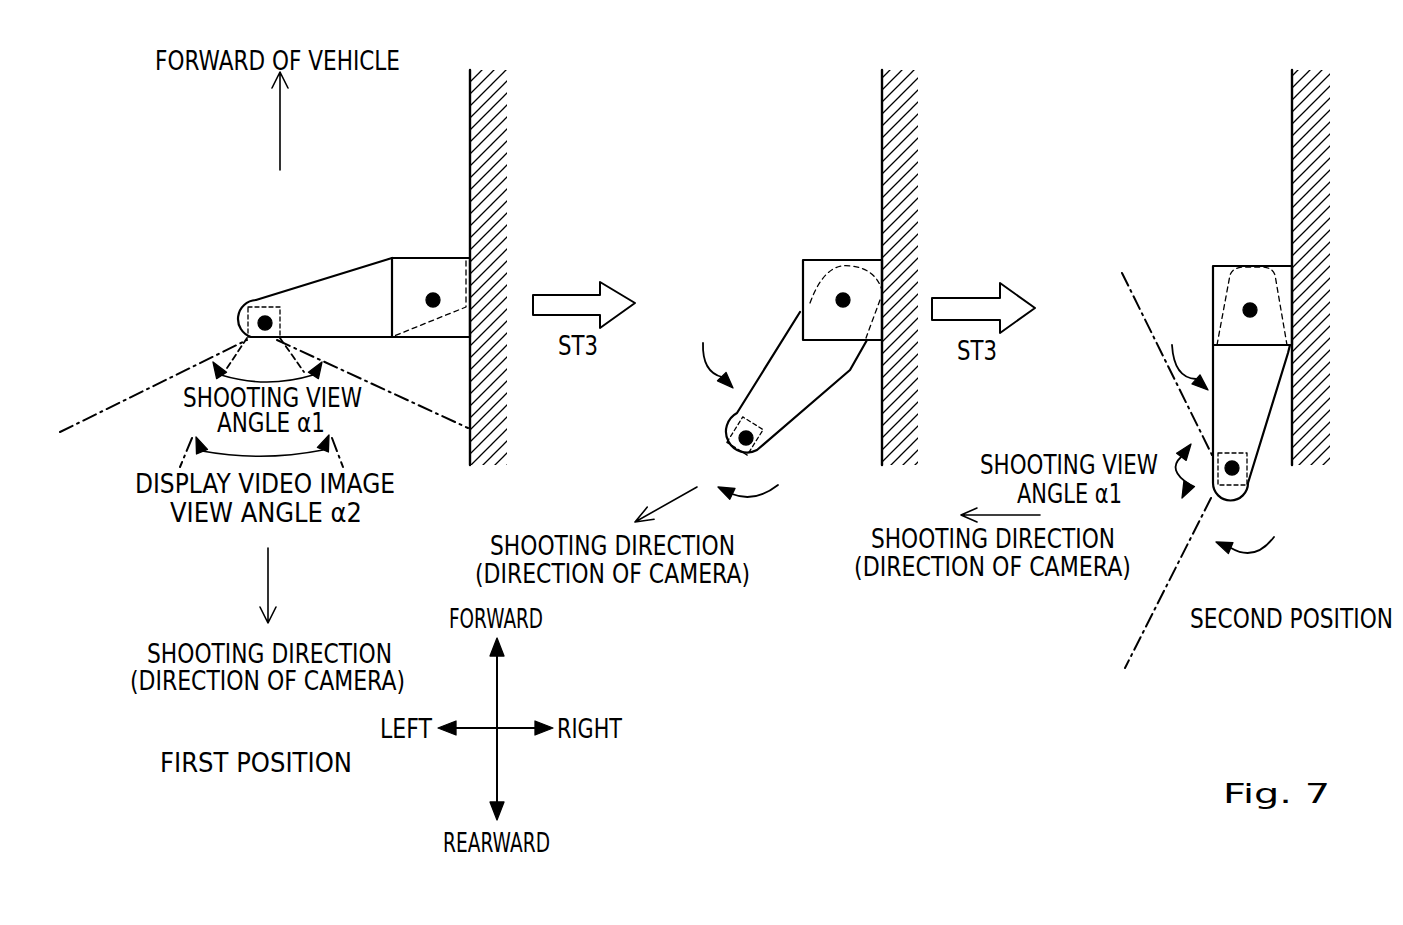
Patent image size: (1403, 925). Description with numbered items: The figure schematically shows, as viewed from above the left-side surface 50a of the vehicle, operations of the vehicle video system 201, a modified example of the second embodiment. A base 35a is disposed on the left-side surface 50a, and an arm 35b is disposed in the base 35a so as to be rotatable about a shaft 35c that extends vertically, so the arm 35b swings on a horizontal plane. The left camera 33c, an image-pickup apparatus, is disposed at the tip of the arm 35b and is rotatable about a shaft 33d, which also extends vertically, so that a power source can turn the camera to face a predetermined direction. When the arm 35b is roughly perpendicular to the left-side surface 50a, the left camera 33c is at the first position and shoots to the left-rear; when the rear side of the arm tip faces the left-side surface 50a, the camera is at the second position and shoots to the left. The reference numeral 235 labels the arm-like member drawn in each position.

The vehicle video system 201 is at (450, 33).
The left-side surface 50a is at (470, 92).
The arm 235 is at (362, 280).
The base 35a is at (435, 258).
The arm 35b is at (368, 323).
The shaft 35c is at (433, 308).
The left camera 33c is at (237, 313).
The shaft 33d is at (265, 315).